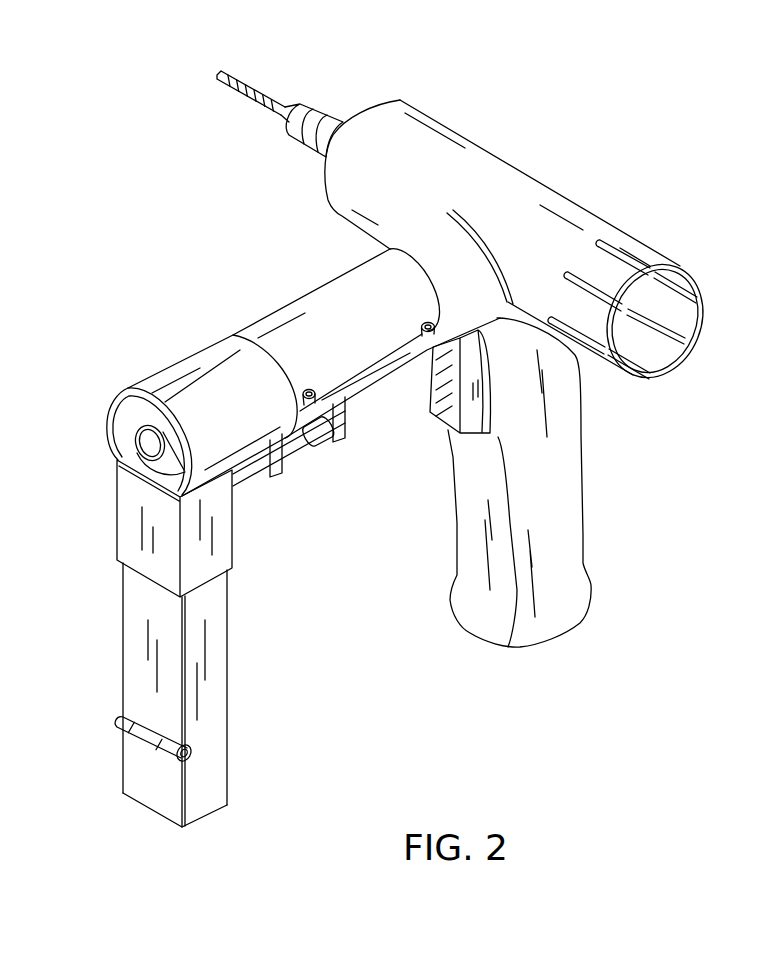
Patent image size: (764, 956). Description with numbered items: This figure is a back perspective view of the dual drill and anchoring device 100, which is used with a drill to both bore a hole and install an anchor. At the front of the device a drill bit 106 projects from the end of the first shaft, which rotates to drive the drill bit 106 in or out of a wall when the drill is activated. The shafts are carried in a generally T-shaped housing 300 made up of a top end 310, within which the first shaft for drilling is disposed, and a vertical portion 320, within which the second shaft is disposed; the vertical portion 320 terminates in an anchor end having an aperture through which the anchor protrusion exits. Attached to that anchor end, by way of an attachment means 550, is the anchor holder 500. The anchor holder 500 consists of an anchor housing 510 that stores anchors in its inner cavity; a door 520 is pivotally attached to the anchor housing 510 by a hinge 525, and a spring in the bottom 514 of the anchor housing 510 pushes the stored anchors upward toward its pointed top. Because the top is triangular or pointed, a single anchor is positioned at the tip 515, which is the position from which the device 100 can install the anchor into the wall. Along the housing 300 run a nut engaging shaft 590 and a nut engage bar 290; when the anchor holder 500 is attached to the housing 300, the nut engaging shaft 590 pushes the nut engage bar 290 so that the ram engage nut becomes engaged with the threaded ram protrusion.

The dual drill and anchoring device 100 is at (710, 218).
The drill bit 106 is at (282, 108).
The nut engage bar 290 is at (342, 445).
The housing 300 is at (532, 215).
The top end 310 is at (430, 167).
The vertical portion 320 is at (318, 298).
The anchor holder 500 is at (152, 597).
The anchor housing 510 is at (217, 708).
The bottom 514 is at (167, 820).
The tip 515 is at (117, 461).
The door 520 is at (143, 670).
The hinge 525 is at (192, 750).
The attachment means 550 is at (197, 372).
The nut engaging shaft 590 is at (312, 447).